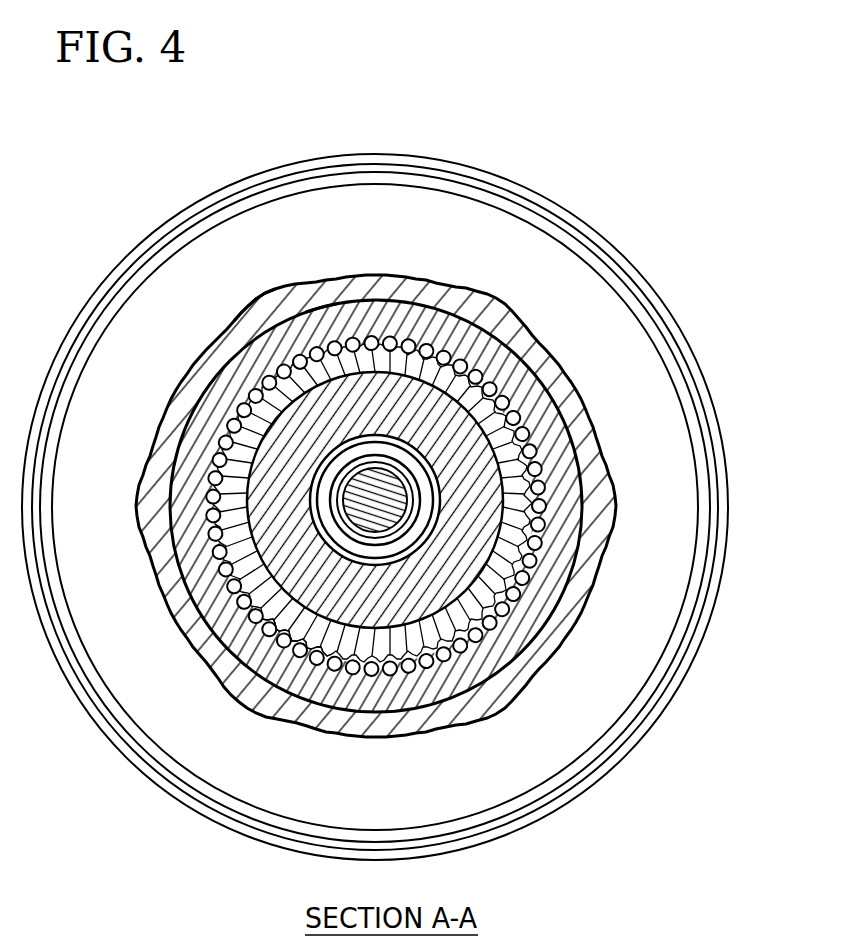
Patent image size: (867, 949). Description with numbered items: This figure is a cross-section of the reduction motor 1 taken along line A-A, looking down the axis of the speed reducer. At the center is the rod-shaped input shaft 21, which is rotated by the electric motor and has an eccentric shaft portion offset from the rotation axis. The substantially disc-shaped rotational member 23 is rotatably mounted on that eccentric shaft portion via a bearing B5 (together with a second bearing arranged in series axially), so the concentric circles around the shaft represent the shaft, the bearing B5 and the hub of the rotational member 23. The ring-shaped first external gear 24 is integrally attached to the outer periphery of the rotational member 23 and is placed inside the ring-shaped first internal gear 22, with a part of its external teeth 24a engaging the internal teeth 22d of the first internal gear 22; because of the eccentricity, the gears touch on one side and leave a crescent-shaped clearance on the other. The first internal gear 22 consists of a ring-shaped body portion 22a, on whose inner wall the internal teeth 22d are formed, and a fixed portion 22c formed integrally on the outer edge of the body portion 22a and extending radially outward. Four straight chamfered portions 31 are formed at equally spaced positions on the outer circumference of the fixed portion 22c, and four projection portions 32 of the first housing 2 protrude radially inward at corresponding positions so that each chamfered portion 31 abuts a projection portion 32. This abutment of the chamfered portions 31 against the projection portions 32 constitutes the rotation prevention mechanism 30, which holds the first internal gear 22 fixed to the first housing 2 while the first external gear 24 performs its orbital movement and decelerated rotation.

The reduction motor 1 is at (700, 137).
The first housing 2 is at (572, 357).
The input shaft 21 is at (372, 455).
The first internal gear 22 is at (450, 292).
The body portion 22a is at (267, 377).
The fixed portion 22c is at (325, 332).
The internal teeth 22d is at (390, 655).
The rotational member 23 is at (500, 442).
The first external gear 24 is at (580, 549).
The external teeth 24a is at (330, 655).
The rotation prevention mechanism 30 is at (133, 118).
The chamfered portions 31 is at (339, 752).
The projection portions 32 is at (392, 758).
The bearing B5 is at (327, 454).